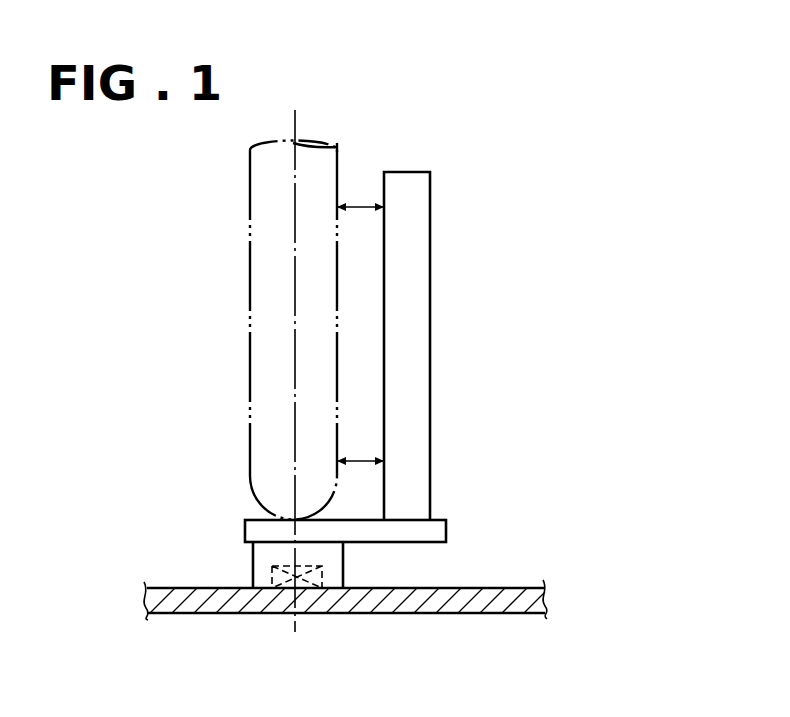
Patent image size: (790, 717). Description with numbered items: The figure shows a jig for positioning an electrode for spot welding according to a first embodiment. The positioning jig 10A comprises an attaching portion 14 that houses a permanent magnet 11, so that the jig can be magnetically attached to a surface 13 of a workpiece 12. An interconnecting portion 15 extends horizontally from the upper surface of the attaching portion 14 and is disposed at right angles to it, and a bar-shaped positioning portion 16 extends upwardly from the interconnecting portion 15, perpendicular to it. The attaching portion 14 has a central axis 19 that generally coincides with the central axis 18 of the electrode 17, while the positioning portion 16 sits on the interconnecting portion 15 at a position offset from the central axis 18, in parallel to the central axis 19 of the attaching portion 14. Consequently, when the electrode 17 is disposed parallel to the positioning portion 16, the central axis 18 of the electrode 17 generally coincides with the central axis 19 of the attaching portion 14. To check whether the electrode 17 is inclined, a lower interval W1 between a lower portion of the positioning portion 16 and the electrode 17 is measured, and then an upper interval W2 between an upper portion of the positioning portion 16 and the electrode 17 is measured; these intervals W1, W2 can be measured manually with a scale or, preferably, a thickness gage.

The positioning jig 10A is at (513, 340).
The permanent magnet 11 is at (320, 574).
The workpiece 12 is at (548, 600).
The surface 13 is at (243, 588).
The attaching portion 14 is at (343, 565).
The interconnecting portion 15 is at (445, 533).
The positioning portion 16 is at (420, 407).
The electrode 17 is at (250, 383).
The central axis of the electrode 18 is at (295, 253).
The central axis of the attaching portion 19 is at (297, 615).
The lower interval W1 is at (363, 461).
The upper interval W2 is at (363, 207).